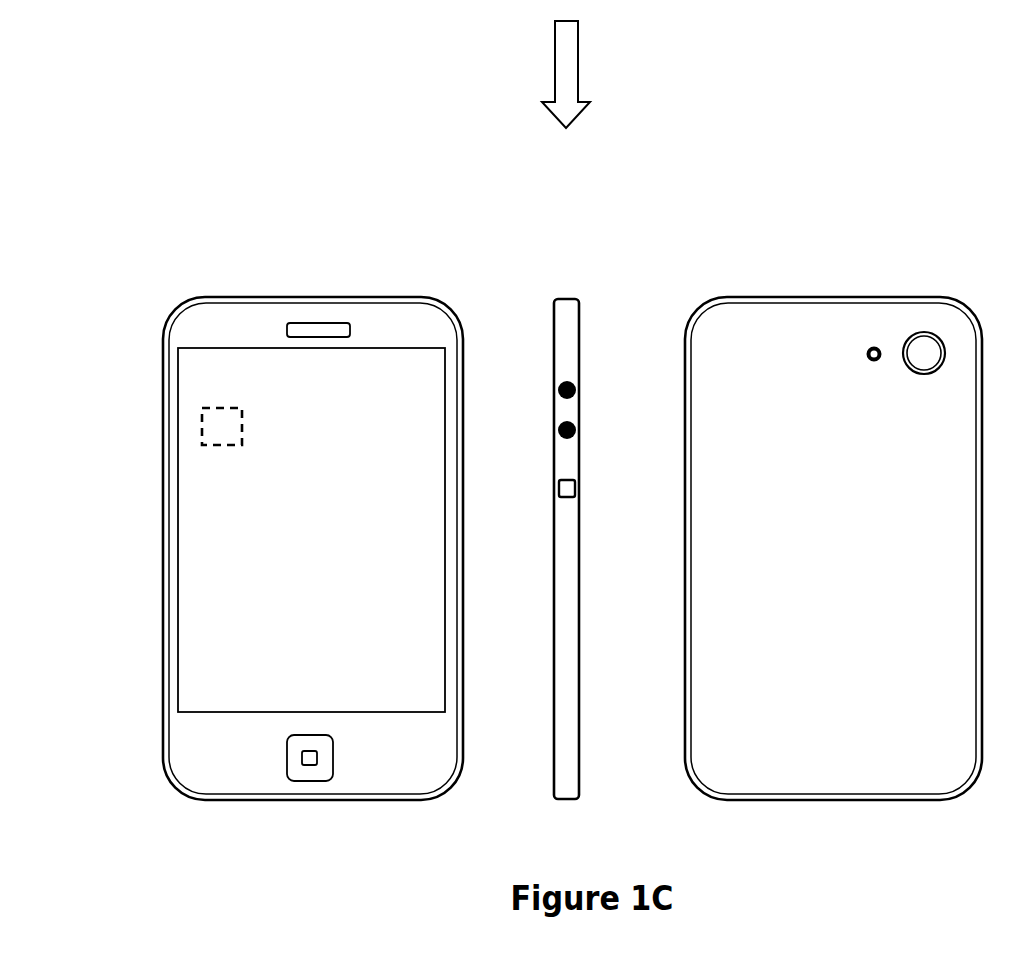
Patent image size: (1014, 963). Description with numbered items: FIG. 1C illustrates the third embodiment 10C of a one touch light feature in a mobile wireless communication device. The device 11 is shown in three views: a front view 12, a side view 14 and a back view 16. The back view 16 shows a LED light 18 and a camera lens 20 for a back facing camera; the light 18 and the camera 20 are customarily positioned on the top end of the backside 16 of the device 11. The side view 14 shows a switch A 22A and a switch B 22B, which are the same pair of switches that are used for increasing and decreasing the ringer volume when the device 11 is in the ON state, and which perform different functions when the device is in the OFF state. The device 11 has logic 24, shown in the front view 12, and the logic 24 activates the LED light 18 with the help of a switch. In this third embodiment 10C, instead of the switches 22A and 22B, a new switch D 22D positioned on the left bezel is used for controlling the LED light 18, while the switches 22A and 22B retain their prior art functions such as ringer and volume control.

The embodiment 10C is at (538, 74).
The device 11 is at (163, 518).
The front view 12 is at (308, 167).
The side view 14 is at (563, 167).
The back view 16 is at (818, 167).
The LED light 18 is at (858, 358).
The camera lens 20 is at (930, 374).
The switch A 22A is at (541, 384).
The switch B 22B is at (541, 434).
The switch D 22D is at (581, 480).
The logic 24 is at (222, 417).